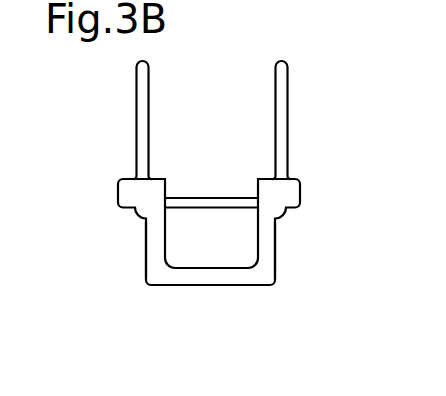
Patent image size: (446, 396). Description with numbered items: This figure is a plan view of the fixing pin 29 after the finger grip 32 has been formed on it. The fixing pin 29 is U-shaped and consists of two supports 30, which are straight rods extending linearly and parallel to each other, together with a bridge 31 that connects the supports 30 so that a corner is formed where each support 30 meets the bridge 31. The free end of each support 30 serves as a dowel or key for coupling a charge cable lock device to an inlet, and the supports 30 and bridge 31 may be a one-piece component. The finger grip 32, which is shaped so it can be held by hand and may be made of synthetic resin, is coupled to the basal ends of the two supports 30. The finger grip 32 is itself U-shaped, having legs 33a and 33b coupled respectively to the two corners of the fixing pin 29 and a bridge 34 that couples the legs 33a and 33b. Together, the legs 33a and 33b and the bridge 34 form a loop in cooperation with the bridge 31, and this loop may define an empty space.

The fixing pin 29 is at (97, 283).
The support 30 is at (136, 88).
The bridge 31 is at (214, 197).
The finger grip 32 is at (276, 261).
The leg 33a is at (146, 233).
The leg 33b is at (276, 232).
The bridge 34 is at (210, 285).